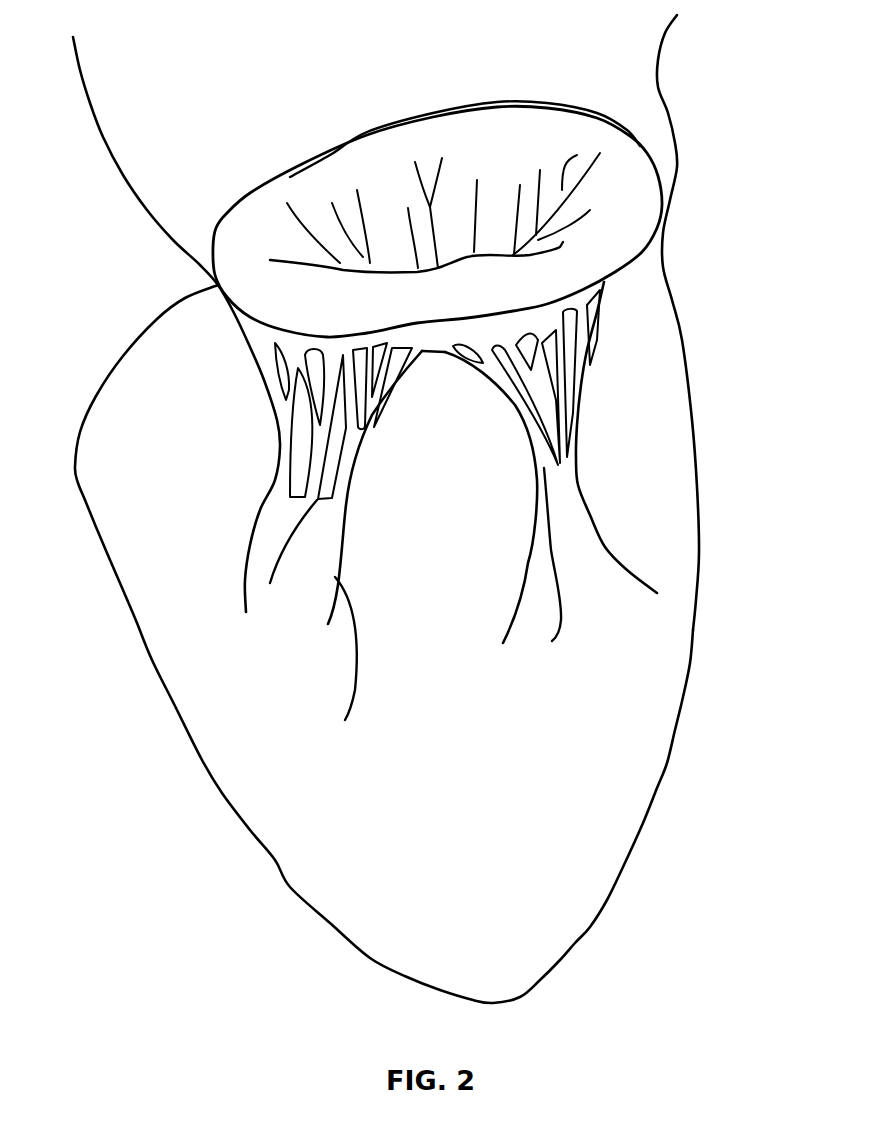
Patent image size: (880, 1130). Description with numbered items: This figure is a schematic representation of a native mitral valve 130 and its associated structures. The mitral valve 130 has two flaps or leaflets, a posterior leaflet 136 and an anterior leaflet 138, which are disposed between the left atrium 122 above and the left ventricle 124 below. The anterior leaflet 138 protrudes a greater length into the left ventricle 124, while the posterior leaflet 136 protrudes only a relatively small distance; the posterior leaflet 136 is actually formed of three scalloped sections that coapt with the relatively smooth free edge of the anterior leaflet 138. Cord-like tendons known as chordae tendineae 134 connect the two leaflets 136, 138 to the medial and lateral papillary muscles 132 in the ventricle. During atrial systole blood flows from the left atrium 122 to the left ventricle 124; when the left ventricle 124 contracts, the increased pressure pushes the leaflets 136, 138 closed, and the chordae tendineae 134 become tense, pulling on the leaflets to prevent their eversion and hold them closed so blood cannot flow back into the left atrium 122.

The left atrium 122 is at (110, 93).
The left ventricle 124 is at (570, 925).
The mitral valve 130 is at (491, 219).
The papillary muscles 132 is at (587, 598).
The chordae tendineae 134 is at (567, 458).
The posterior leaflet 136 is at (632, 227).
The anterior leaflet 138 is at (610, 165).